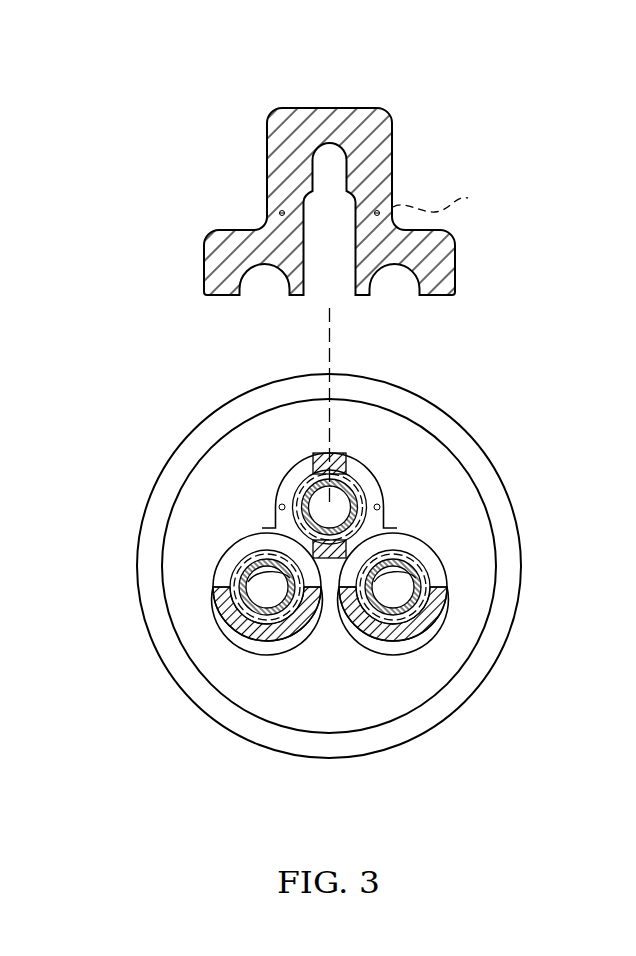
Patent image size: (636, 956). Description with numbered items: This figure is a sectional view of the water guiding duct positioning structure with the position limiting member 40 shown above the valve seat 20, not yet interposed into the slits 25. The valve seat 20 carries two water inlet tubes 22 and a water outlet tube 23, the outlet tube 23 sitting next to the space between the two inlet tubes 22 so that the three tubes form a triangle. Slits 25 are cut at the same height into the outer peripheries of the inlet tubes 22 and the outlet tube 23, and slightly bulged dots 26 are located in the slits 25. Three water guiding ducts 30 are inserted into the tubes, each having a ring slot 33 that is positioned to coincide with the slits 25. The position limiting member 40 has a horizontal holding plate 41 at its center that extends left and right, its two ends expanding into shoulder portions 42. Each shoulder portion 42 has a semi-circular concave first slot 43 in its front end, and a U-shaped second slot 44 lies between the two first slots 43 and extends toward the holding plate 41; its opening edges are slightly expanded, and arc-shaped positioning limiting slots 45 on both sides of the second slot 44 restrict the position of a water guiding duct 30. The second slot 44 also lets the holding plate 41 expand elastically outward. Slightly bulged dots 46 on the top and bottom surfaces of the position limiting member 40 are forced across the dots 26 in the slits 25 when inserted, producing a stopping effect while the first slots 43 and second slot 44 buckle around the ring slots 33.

The valve seat 20 is at (206, 727).
The water inlet tubes 22 is at (213, 600).
The water outlet tube 23 is at (360, 453).
The slits 25 is at (282, 493).
The slightly bulged dots 26 is at (377, 492).
The water guiding ducts 30 is at (314, 468).
The ring slot 33 is at (407, 537).
The position limiting member 40 is at (396, 102).
The holding plate 41 is at (287, 130).
The shoulder portions 42 is at (215, 270).
The first slot 43 is at (260, 285).
The second slot 44 is at (317, 253).
The arc-shaped positioning limiting slot 45 is at (393, 178).
The slightly bulged dots 46 is at (447, 201).